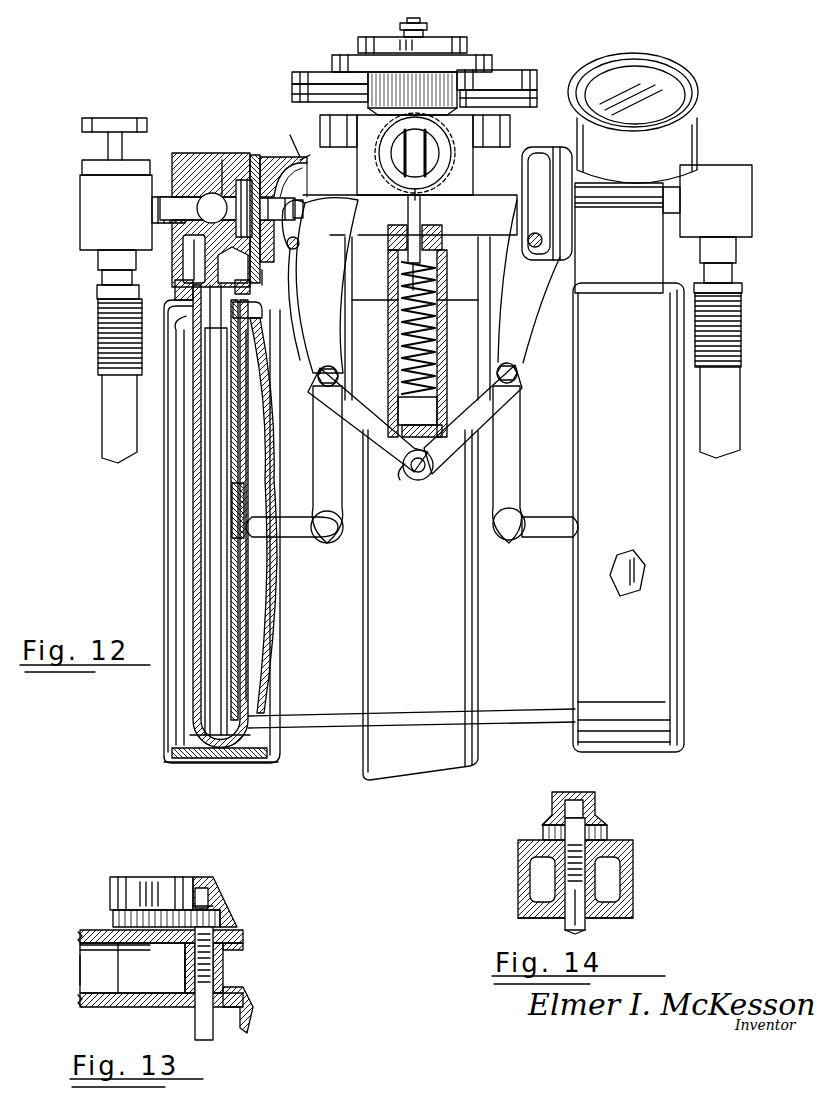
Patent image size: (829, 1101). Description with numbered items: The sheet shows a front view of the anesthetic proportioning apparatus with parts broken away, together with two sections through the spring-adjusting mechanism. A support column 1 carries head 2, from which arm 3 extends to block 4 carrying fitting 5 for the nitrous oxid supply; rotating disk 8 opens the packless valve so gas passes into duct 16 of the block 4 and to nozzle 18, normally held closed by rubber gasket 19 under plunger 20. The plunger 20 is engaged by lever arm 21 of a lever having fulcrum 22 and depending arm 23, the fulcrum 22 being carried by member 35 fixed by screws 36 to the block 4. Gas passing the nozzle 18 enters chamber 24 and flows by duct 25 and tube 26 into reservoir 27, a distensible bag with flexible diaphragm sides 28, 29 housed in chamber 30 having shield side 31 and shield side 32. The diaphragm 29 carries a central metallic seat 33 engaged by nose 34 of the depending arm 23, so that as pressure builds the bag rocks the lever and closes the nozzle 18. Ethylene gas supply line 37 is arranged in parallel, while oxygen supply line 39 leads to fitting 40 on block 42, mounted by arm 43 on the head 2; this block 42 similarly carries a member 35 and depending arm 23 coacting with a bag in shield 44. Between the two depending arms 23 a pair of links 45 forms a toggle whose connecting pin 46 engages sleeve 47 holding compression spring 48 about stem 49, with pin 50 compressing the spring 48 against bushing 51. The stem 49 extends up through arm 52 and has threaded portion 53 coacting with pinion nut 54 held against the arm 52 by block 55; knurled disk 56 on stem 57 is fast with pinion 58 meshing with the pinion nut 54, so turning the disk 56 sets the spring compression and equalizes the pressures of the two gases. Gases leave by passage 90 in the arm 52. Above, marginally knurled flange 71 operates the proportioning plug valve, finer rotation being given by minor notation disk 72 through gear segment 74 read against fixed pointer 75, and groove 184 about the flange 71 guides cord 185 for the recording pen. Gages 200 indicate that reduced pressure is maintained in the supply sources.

In FIG. 12, the column 1 is at (372, 636).
In FIG. 12, the head 2 is at (345, 250).
In FIG. 12, the arm 3 is at (288, 136).
In FIG. 12, the block 4 is at (222, 153).
In FIG. 12, the fitting 5 is at (80, 208).
In FIG. 12, the disk 8 is at (82, 126).
In FIG. 12, the duct 16 is at (200, 153).
In FIG. 12, the nozzle 18 is at (296, 198).
In FIG. 12, the rubber gasket 19 is at (275, 262).
In FIG. 12, the plunger 20 is at (304, 212).
In FIG. 12, the lever arm 21 is at (335, 228).
In FIG. 12, the fulcrum 22 is at (286, 305).
In FIG. 12, the depending arm 23 is at (314, 344).
In FIG. 12, the chamber 24 is at (255, 155).
In FIG. 12, the duct 25 is at (205, 262).
In FIG. 12, the tube 26 is at (214, 494).
In FIG. 12, the reservoir 27 is at (196, 728).
In FIG. 12, the flexible diaphragm side 28 is at (195, 588).
In FIG. 12, the flexible diaphragm side 29 is at (245, 612).
In FIG. 12, the chamber 30 is at (205, 768).
In FIG. 12, the shield side 31 is at (176, 545).
In FIG. 12, the shield side 32 is at (276, 570).
In FIG. 12, the central metallic insert or seat 33 is at (246, 520).
In FIG. 12, the nose 34 is at (280, 540).
In FIG. 12, the member 35 is at (300, 164).
In FIG. 12, the screws 36 is at (540, 134).
In FIG. 12, the ethylene gas supply line 37 is at (104, 432).
In FIG. 12, the oxygen supply line 39 is at (724, 416).
In FIG. 12, the fitting 40 is at (740, 180).
In FIG. 12, the block 42 is at (622, 290).
In FIG. 12, the arm 43 is at (462, 186).
In FIG. 12, the shield 44 is at (640, 645).
In FIG. 12, the links 45 is at (428, 485).
In FIG. 12, the connecting pin 46 is at (402, 482).
In FIG. 12, the sleeve 47 is at (442, 262).
In FIG. 12, the compression spring 48 is at (398, 348).
In FIG. 12, the stem 49 is at (396, 292).
In FIG. 13, the stem 49 is at (195, 1025).
In FIG. 14, the stem 49 is at (565, 926).
In FIG. 12, the pin 50 is at (438, 385).
In FIG. 12, the bushing 51 is at (408, 216).
In FIG. 12, the arm 52 is at (470, 158).
In FIG. 13, the arm 52 is at (152, 1007).
In FIG. 14, the arm 52 is at (634, 905).
In FIG. 13, the threaded portion 53 is at (250, 947).
In FIG. 14, the threaded portion 53 is at (633, 842).
In FIG. 13, the pinion nut 54 is at (228, 920).
In FIG. 14, the pinion nut 54 is at (610, 826).
In FIG. 13, the block 55 is at (222, 900).
In FIG. 14, the block 55 is at (596, 815).
In FIG. 12, the knurled disk 56 is at (395, 80).
In FIG. 13, the knurled disk 56 is at (175, 870).
In FIG. 13, the stem 57 is at (132, 968).
In FIG. 13, the pinion 58 is at (113, 918).
In FIG. 12, the marginally knurled flange 71 is at (522, 70).
In FIG. 12, the minor notation disk 72 is at (366, 44).
In FIG. 12, the gear segment 74 is at (524, 106).
In FIG. 12, the fixed pointer 75 is at (430, 27).
In FIG. 12, the passage 90 is at (395, 148).
In FIG. 13, the passage 90 is at (88, 982).
In FIG. 14, the passage 90 is at (608, 878).
In FIG. 12, the groove 184 is at (302, 88).
In FIG. 12, the cord 185 is at (300, 104).
In FIG. 12, the gages 200 is at (690, 105).